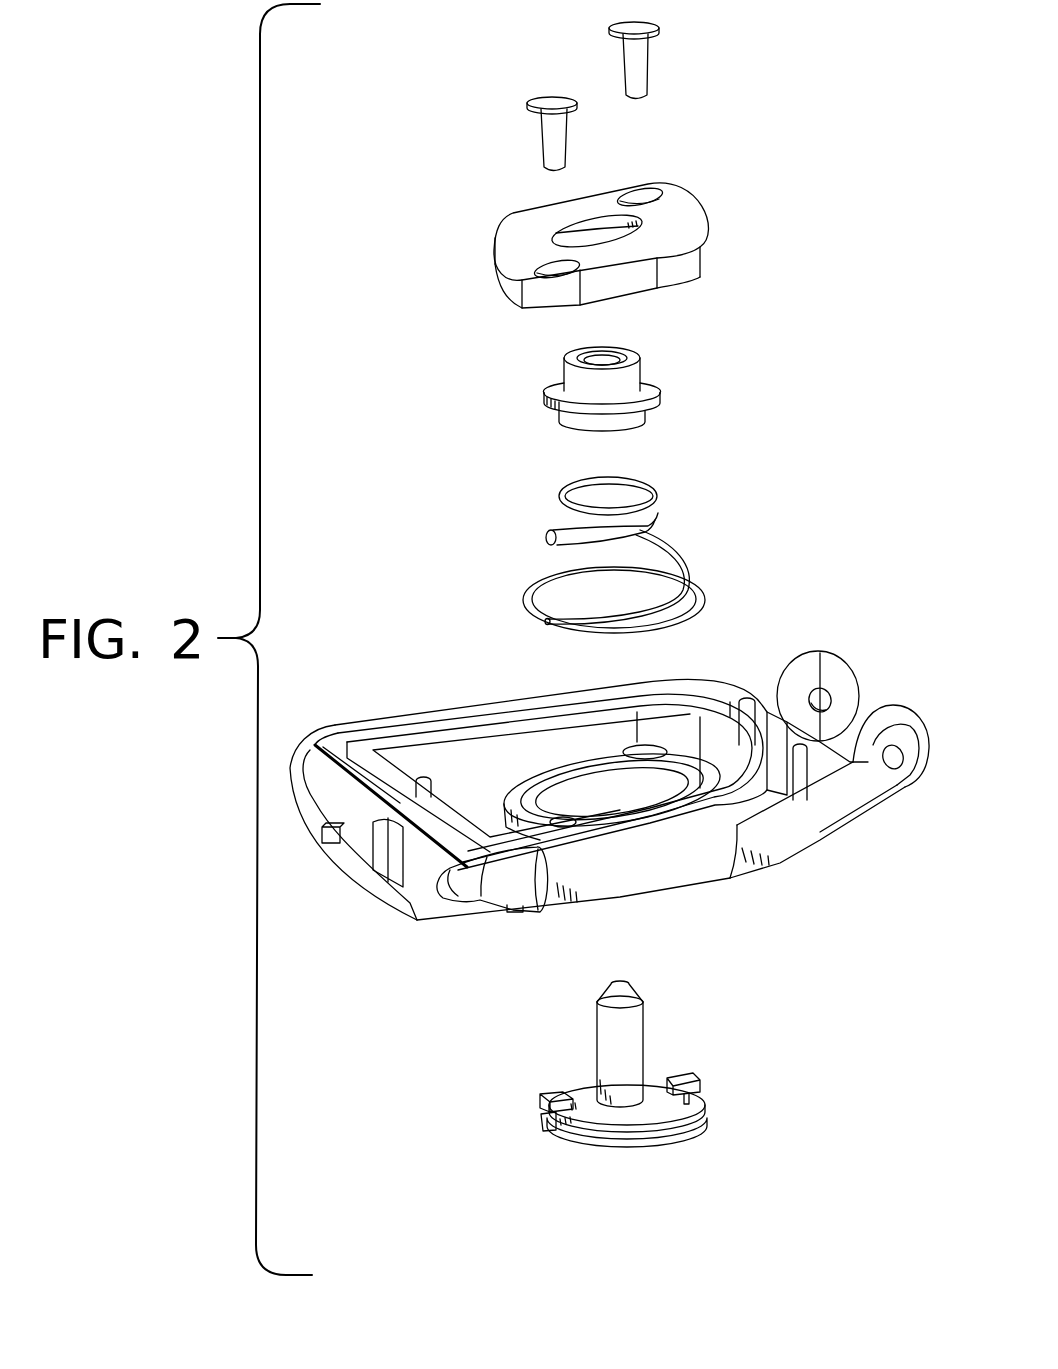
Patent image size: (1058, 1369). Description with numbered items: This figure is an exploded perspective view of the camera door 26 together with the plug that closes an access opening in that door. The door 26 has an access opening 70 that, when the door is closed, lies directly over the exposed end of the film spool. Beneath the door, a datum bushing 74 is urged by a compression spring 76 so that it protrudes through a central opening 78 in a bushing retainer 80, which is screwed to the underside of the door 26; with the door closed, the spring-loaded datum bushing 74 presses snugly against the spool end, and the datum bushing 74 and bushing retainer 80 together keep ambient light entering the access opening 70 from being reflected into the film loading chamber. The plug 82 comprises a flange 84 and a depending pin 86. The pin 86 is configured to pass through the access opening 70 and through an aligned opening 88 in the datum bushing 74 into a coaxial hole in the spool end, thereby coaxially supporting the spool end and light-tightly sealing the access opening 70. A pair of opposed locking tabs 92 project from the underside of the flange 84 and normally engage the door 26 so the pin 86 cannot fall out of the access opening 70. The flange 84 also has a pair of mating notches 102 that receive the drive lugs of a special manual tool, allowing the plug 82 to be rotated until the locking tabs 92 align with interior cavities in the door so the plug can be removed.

The door 26 is at (609, 792).
The access opening 70 is at (591, 816).
The datum bushing 74 is at (600, 375).
The compression spring 76 is at (547, 537).
The central opening 78 is at (573, 237).
The bushing retainer 80 is at (570, 238).
The plug 82 is at (642, 1112).
The flange 84 is at (623, 1148).
The pin 86 is at (600, 1040).
The aligned opening 88 is at (617, 359).
The locking tabs 92 is at (700, 1080).
The mating notches 102 is at (702, 1093).